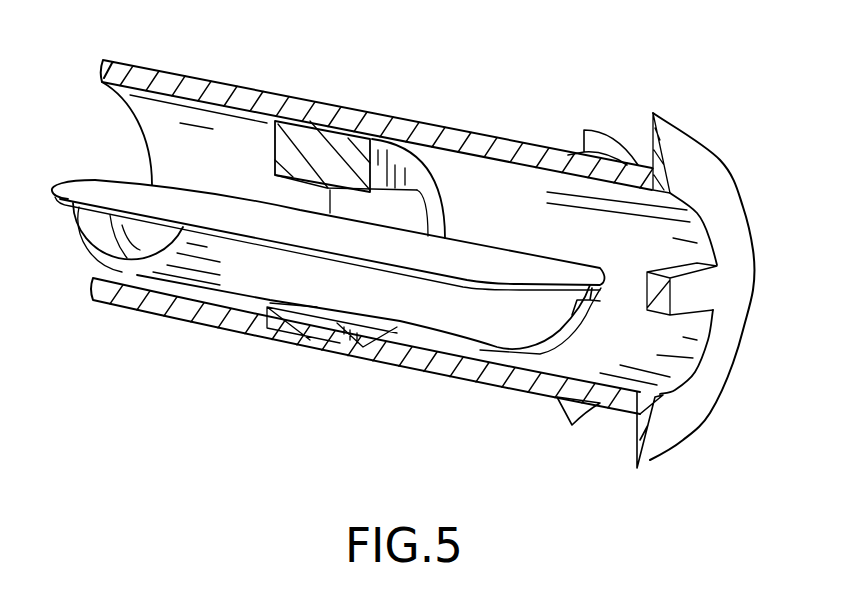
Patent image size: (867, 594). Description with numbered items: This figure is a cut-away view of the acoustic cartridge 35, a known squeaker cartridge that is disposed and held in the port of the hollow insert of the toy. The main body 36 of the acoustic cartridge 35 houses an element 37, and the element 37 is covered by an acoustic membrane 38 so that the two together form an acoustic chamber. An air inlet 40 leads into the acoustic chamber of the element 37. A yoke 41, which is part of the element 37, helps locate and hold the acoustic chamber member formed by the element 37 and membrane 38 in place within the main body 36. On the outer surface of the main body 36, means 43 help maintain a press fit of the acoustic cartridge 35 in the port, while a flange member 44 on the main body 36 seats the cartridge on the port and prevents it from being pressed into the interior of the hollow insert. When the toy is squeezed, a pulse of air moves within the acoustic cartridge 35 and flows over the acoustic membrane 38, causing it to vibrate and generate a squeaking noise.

The acoustic cartridge 35 is at (508, 98).
The main body 36 is at (517, 380).
The element 37 is at (437, 317).
The acoustic membrane 38 is at (477, 262).
The air inlet 40 is at (612, 304).
The yoke 41 is at (340, 150).
The means for maintaining a press fit 43 is at (570, 405).
The flange member 44 is at (643, 443).